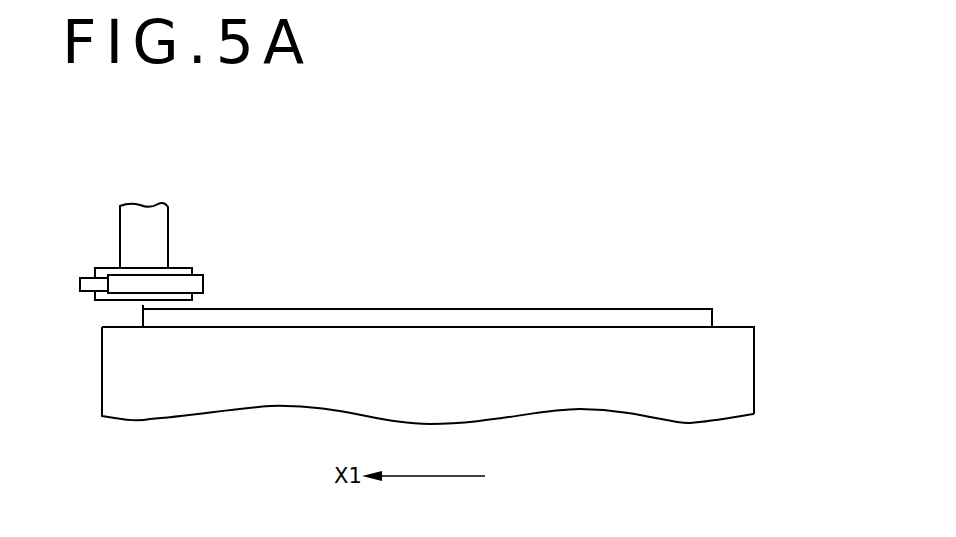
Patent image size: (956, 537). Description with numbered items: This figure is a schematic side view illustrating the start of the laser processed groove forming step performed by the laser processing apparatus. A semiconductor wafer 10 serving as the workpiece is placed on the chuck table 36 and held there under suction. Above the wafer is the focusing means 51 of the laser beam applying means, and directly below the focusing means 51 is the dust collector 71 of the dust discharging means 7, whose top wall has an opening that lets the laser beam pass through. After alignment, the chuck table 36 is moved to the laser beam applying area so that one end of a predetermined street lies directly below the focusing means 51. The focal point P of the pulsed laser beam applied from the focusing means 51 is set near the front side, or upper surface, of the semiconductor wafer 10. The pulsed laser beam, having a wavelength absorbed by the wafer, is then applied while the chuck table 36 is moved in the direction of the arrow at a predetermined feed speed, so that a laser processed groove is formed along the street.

The dust discharging means 7 is at (155, 251).
The focusing means 51 is at (160, 225).
The dust collector 71 is at (193, 270).
The focal point P is at (143, 304).
The semiconductor wafer 10 is at (562, 310).
The chuck table 36 is at (727, 372).